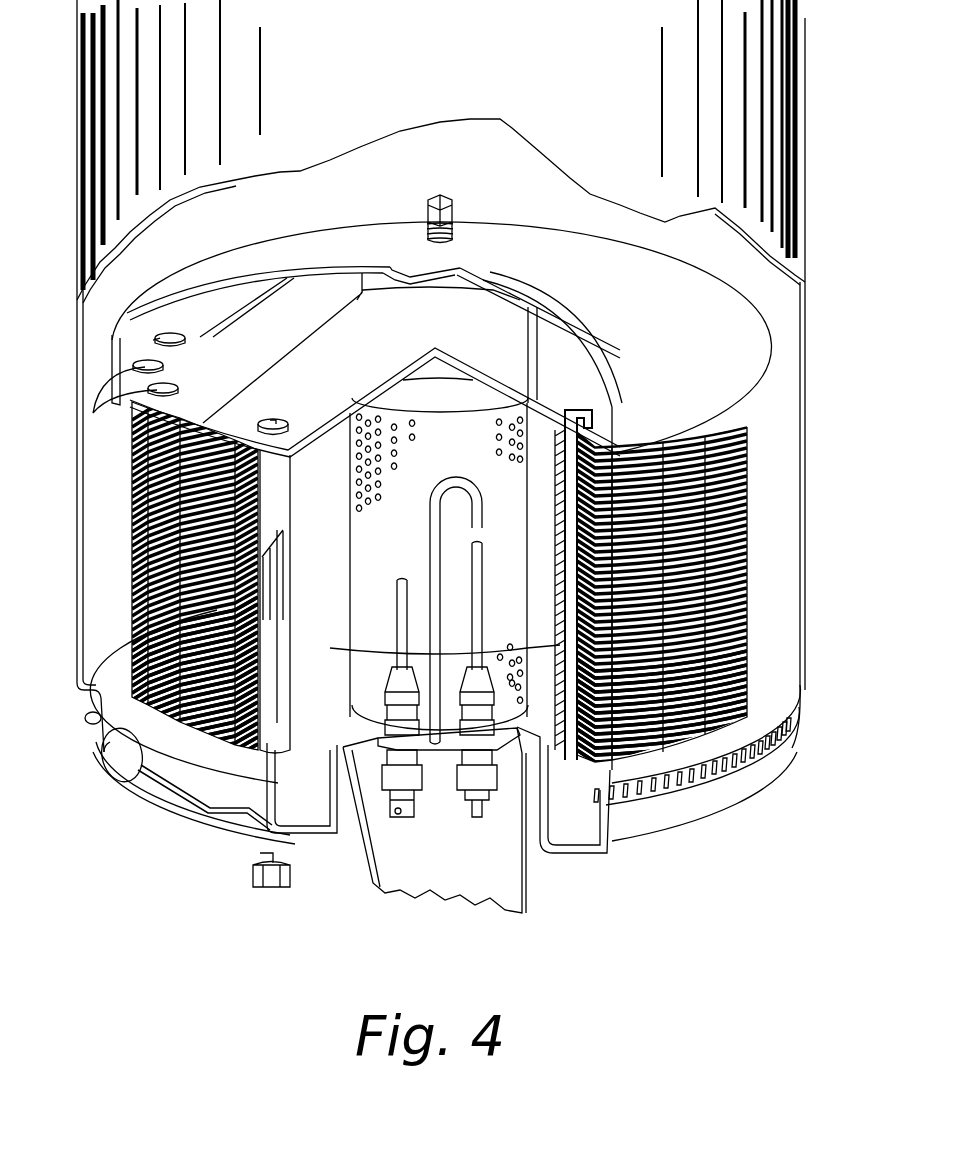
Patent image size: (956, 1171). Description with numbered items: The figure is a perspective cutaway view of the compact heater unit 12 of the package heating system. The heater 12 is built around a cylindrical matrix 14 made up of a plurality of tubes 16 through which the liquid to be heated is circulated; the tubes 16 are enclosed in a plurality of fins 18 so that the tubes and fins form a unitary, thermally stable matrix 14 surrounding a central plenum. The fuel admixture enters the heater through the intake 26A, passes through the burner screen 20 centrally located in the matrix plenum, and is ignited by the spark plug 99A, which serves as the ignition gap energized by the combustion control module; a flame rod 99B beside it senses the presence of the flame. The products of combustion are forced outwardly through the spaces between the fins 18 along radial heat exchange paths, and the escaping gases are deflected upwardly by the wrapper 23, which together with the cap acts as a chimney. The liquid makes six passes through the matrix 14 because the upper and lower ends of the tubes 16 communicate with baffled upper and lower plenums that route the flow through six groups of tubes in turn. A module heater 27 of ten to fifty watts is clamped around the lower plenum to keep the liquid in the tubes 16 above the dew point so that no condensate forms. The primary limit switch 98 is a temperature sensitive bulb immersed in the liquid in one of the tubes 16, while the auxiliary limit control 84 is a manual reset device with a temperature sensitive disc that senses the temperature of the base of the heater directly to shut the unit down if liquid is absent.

The heater unit 12 is at (668, 348).
The cylindrical matrix 14 is at (748, 522).
The tubes 16 is at (572, 414).
The fins 18 is at (553, 513).
The burner screen 20 is at (348, 512).
The wrapper 23 is at (805, 233).
The intake 26A is at (524, 867).
The module heater 27 is at (668, 805).
The auxiliary limit control 84 is at (112, 778).
The limit switch 98 is at (280, 418).
The spark plug 99A is at (483, 573).
The flame rod 99B is at (396, 585).